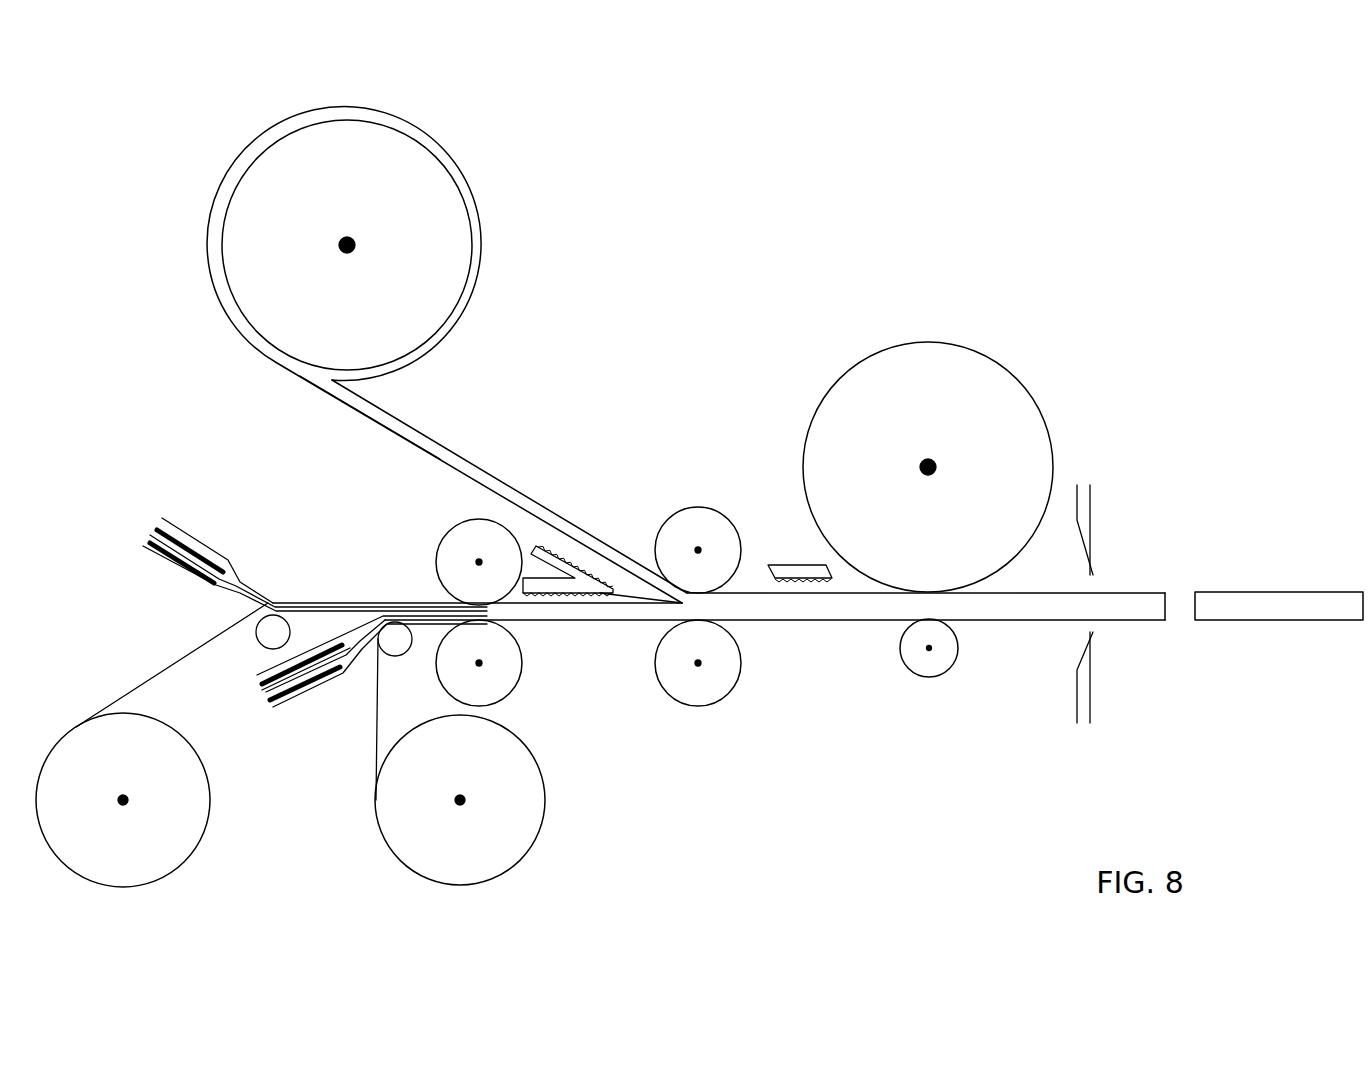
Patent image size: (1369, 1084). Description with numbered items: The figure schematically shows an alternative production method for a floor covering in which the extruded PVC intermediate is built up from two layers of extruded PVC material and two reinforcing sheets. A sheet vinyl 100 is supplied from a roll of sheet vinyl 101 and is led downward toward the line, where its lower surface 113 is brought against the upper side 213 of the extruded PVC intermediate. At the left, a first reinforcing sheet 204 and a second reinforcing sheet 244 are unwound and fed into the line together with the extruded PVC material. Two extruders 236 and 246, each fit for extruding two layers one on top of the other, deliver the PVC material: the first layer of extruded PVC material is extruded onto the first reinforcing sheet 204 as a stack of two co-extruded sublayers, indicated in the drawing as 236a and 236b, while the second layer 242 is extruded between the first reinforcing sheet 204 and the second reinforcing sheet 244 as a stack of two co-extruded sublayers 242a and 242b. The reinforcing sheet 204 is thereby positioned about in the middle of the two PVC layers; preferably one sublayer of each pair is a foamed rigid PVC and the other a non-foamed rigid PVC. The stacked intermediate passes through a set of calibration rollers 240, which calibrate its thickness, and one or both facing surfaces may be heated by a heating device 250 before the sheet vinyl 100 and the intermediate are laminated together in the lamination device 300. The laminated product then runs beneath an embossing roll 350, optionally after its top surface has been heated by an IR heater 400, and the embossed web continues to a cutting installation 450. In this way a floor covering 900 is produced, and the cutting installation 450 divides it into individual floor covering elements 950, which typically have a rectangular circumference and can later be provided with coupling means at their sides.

The roll of sheet vinyl 101 is at (327, 190).
The sheet vinyl 100 is at (453, 461).
The lower surface of the sheet vinyl 113 is at (355, 411).
The upper side of the extruded PVC intermediate 213 is at (630, 601).
The heating device 250 is at (535, 543).
The calibration rollers 240 is at (463, 552).
The lamination device 300 is at (682, 540).
The embossing roll 350 is at (905, 402).
The IR heater 400 is at (800, 565).
The cutting installation 450 is at (1092, 513).
The floor covering 900 is at (1003, 610).
The floor covering elements 950 is at (1340, 598).
The extruder 236 is at (248, 590).
The first strip 236a is at (262, 600).
The second strip 236b is at (247, 598).
The second layer of extruded PVC material 242 is at (452, 610).
The co-extruded sublayer 242a is at (453, 620).
The co-extruded sublayer 242b is at (433, 617).
The extruder 246 is at (293, 700).
The reinforcing sheet 204 is at (107, 764).
The second reinforcing sheet 244 is at (444, 764).